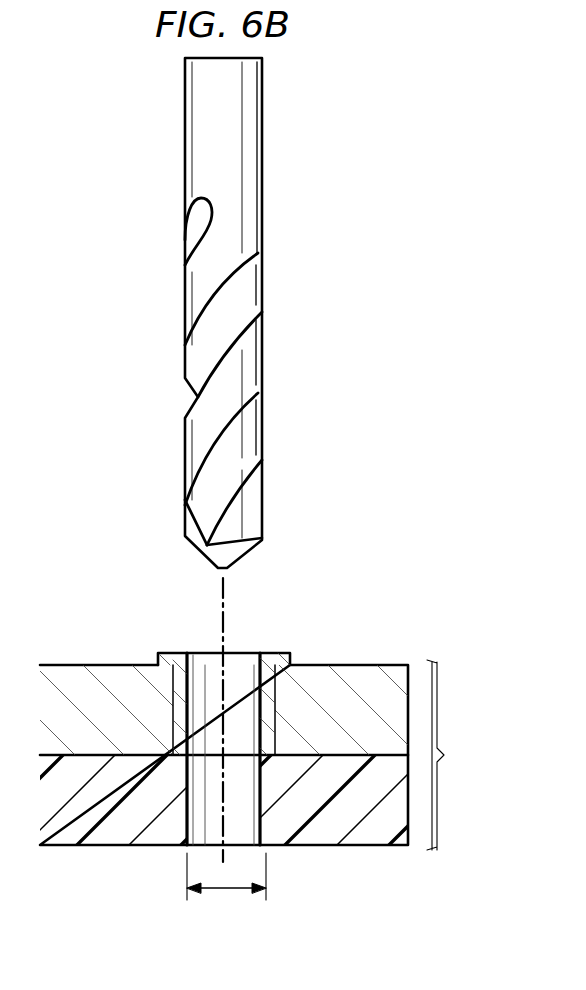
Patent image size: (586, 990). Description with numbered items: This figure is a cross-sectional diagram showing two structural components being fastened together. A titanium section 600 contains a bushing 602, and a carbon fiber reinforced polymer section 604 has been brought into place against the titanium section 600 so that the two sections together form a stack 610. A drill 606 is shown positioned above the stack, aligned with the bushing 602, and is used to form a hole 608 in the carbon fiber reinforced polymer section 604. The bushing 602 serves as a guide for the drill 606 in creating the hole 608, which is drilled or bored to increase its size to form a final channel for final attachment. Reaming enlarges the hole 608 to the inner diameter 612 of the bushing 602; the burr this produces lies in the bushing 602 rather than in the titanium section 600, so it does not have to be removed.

The titanium section 600 is at (239, 749).
The bushing 602 is at (158, 658).
The carbon fiber reinforced polymer (CFRP) section 604 is at (364, 848).
The drill 606 is at (185, 165).
The hole 608 is at (240, 665).
The stack 610 is at (458, 755).
The inner diameter 612 is at (227, 890).